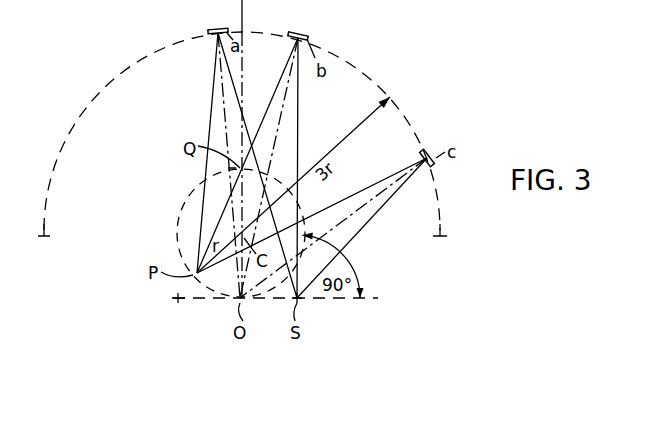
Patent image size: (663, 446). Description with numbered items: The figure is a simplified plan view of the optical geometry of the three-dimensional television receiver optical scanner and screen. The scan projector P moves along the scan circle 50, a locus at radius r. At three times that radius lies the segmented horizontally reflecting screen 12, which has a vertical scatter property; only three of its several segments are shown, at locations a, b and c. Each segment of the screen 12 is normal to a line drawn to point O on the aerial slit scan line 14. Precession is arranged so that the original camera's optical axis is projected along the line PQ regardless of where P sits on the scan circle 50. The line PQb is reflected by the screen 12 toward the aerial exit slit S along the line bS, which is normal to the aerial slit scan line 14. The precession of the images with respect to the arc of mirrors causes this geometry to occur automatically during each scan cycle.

The segmented horizontally reflecting screen 12 is at (84, 123).
The aerial slit scan line 14 is at (205, 300).
The scan circle 50 is at (181, 241).